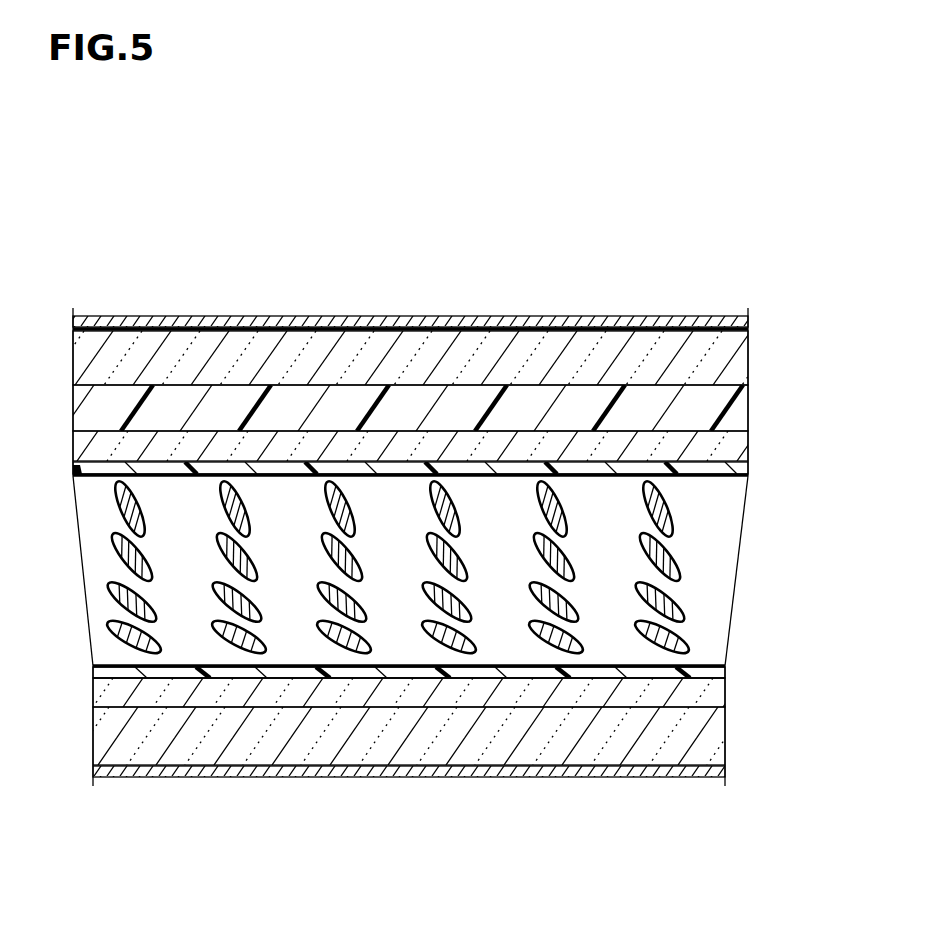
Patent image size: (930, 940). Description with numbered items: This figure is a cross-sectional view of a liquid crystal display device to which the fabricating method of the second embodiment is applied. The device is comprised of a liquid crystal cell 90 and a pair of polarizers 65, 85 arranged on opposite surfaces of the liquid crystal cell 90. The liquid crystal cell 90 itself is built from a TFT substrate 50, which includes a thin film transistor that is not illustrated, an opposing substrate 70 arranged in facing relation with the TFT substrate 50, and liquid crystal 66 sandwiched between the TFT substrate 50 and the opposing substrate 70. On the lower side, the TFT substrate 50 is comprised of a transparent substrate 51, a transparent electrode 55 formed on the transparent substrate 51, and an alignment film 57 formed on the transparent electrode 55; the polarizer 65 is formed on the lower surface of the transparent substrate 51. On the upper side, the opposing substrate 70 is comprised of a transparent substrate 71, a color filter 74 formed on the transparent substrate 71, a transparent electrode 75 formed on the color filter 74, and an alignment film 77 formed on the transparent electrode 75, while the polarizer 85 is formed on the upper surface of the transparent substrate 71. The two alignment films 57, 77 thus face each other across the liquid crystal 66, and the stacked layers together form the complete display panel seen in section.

The opposing substrate 70 is at (445, 56).
The transparent substrate 71 is at (410, 317).
The polarizer 85 is at (410, 289).
The color filter 74 is at (410, 340).
The transparent electrode 75 is at (410, 355).
The alignment film 77 is at (410, 362).
The liquid crystal cell 90 is at (829, 566).
The TFT substrate 50 is at (447, 938).
The transparent substrate 51 is at (409, 777).
The transparent electrode 55 is at (409, 762).
The alignment film 57 is at (409, 756).
The polarizer 65 is at (409, 806).
The liquid crystal 66 is at (409, 758).